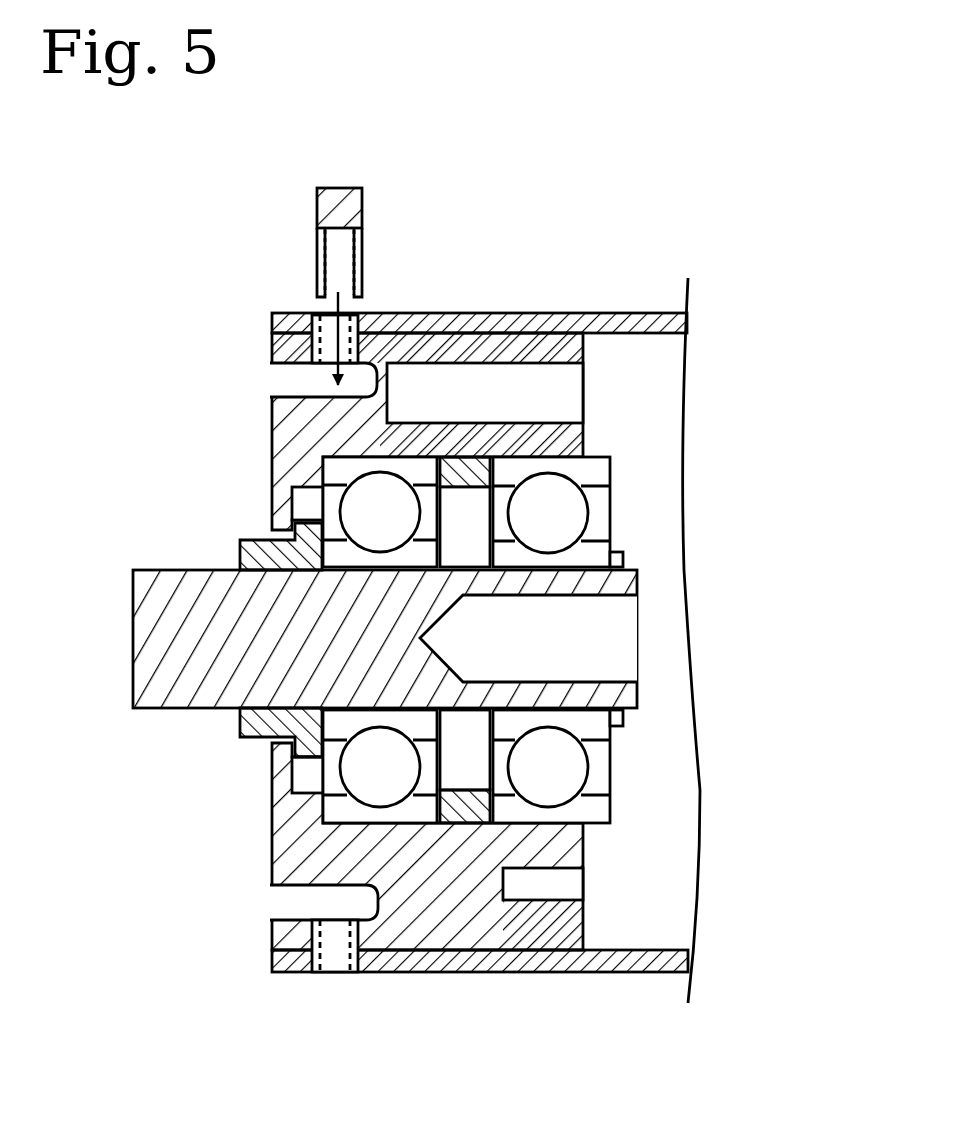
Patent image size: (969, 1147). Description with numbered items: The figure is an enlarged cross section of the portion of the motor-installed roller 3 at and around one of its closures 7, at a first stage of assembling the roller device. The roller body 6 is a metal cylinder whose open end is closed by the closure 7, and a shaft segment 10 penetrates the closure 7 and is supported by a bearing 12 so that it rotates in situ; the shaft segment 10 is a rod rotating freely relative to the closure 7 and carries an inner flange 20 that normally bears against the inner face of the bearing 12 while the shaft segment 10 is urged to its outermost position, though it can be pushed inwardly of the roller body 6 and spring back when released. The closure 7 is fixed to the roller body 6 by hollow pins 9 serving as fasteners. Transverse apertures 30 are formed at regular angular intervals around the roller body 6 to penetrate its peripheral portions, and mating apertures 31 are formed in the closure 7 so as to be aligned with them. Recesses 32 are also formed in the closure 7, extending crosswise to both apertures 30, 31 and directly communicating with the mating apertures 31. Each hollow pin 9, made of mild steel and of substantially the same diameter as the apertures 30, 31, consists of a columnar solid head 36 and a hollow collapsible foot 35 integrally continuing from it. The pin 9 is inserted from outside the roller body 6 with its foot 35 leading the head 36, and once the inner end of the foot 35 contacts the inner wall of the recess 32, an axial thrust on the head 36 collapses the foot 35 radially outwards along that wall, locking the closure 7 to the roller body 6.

The motor-installed roller 3 is at (712, 222).
The roller body 6 is at (587, 313).
The closure 7 is at (272, 450).
The hollow pin 9 is at (329, 244).
The shaft segment 10 is at (150, 657).
The bearing 12 is at (597, 472).
The inner flange 20 is at (623, 558).
The transverse aperture 30 is at (362, 318).
The mating aperture 31 is at (290, 320).
The recess 32 is at (290, 382).
The hollow collapsible foot 35 is at (365, 262).
The solid head 36 is at (317, 222).